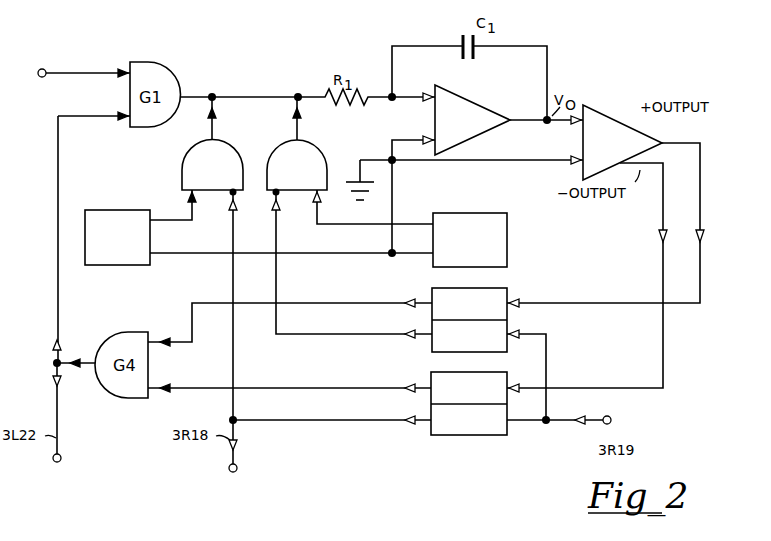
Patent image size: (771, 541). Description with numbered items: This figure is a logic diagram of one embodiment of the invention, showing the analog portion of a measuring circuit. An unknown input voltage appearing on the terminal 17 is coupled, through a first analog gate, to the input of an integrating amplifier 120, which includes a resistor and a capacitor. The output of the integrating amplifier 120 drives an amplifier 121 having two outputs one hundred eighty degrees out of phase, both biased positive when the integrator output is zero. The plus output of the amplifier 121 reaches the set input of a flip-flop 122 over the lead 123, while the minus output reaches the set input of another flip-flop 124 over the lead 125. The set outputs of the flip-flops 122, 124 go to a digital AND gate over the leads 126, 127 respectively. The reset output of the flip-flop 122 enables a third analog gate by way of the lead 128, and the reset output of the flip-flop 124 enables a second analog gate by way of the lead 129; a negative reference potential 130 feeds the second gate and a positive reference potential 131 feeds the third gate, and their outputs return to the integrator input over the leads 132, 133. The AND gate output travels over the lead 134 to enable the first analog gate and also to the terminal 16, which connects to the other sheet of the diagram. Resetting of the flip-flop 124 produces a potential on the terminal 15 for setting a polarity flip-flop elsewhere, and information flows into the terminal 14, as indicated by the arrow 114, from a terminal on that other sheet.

The terminal 17 is at (36, 78).
The integrating amplifier 120 is at (472, 108).
The amplifier 121 is at (606, 118).
The flip-flop 122 is at (504, 288).
The lead 123 is at (598, 305).
The flip-flop 124 is at (465, 436).
The lead 125 is at (590, 387).
The lead 126 is at (335, 305).
The lead 127 is at (335, 390).
The lead 128 is at (335, 336).
The lead 129 is at (335, 421).
The negative reference potential 130 is at (120, 210).
The positive reference potential 131 is at (492, 213).
The lead 132 is at (214, 128).
The lead 133 is at (299, 128).
The lead 134 is at (58, 316).
The arrow 114 is at (578, 426).
The terminal 14 is at (611, 423).
The terminal 15 is at (237, 470).
The terminal 16 is at (53, 461).